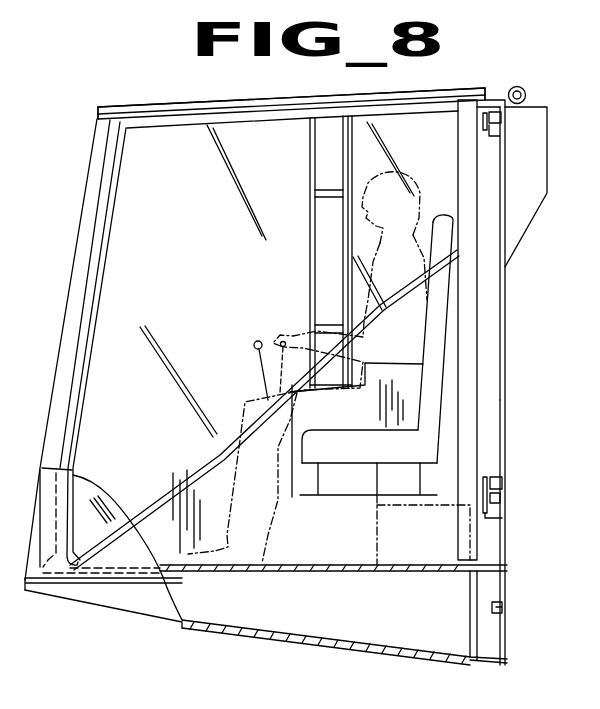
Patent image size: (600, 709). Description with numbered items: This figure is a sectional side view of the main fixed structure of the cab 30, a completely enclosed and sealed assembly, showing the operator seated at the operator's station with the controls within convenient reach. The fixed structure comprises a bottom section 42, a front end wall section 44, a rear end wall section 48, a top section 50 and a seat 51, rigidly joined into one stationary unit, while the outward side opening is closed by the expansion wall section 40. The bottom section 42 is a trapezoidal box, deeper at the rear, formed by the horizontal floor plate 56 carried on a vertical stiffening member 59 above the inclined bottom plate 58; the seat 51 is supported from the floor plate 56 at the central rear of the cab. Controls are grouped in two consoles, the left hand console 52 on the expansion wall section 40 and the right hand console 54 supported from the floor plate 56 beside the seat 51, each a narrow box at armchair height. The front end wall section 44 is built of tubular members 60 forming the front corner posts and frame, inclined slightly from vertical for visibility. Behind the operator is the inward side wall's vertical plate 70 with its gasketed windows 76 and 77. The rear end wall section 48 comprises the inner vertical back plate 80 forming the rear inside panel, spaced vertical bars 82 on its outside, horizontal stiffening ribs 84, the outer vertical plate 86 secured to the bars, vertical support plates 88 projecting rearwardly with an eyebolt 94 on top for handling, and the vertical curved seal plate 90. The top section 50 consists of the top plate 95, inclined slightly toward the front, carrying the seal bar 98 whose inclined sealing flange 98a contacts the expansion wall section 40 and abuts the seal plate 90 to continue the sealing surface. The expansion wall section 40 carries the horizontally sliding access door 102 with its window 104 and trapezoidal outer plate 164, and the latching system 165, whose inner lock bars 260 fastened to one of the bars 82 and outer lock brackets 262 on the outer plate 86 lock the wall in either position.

The cab 30 is at (210, 637).
The expansion wall section 40 is at (84, 582).
The bottom section 42 is at (283, 640).
The front end wall section 44 is at (78, 238).
The rear end wall section 48 is at (506, 330).
The top section 50 is at (324, 108).
The seat 51 is at (354, 456).
The left hand operator's console 52 is at (212, 444).
The right hand operator's console 54 is at (229, 460).
The horizontal floor plate 56 is at (292, 571).
The inclined bottom plate 58 is at (312, 642).
The vertical stiffening member 59 is at (377, 630).
The tubular members 60 is at (107, 212).
The vertical plate 70 is at (455, 358).
The gasketed window 76 is at (220, 249).
The gasketed window 77 is at (443, 173).
The inner vertical back plate 80 is at (502, 570).
The spaced vertical bars 82 is at (495, 375).
The horizontal stiffening ribs 84 is at (500, 497).
The outer vertical plate 86 is at (505, 397).
The vertical support plates 88 is at (533, 203).
The vertical curved seal plate 90 is at (472, 278).
The eyebolt 94 is at (509, 89).
The top plate 95 is at (160, 118).
The seal bar 98 is at (258, 108).
The sealing flange 98a is at (214, 102).
The horizontally sliding access door 102 is at (43, 497).
The window 104 is at (97, 495).
The outer plate 164 is at (155, 577).
The latching system 165 is at (501, 126).
The inner lock bars 260 is at (497, 125).
The outer lock brackets 262 is at (493, 136).